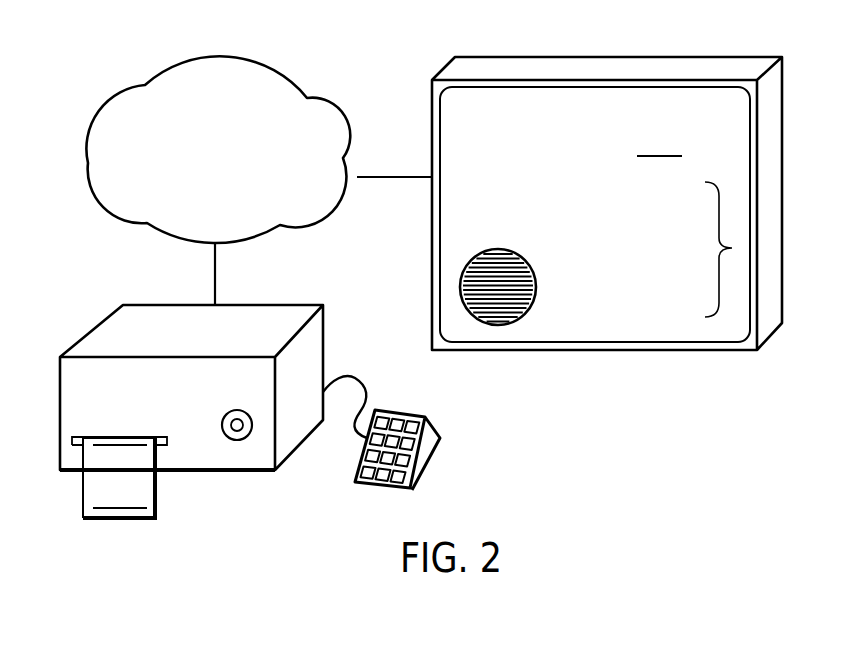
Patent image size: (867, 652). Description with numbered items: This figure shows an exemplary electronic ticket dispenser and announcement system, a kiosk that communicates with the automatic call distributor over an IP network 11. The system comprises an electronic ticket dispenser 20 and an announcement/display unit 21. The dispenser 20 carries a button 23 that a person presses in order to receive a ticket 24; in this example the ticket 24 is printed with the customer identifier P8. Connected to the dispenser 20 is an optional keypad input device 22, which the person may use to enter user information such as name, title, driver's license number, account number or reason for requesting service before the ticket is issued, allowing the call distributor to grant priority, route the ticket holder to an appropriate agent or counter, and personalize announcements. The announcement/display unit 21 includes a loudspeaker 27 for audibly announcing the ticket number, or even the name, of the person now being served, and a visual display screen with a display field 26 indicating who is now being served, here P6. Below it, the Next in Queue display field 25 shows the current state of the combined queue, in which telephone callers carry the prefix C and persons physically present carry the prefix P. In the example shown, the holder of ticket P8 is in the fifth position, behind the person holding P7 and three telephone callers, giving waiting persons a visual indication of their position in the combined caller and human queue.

The IP network 11 is at (207, 197).
The electronic ticket dispenser 20 is at (95, 323).
The announcement/display unit 21 is at (720, 53).
The keypad input device 22 is at (433, 423).
The button 23 is at (237, 440).
The ticket 24 is at (115, 522).
The Next in Queue display field 25 is at (732, 248).
The display field 26 is at (680, 138).
The loudspeaker 27 is at (460, 289).